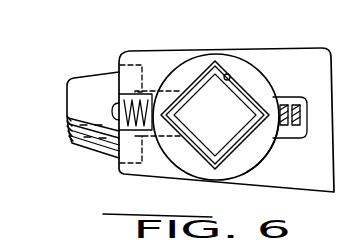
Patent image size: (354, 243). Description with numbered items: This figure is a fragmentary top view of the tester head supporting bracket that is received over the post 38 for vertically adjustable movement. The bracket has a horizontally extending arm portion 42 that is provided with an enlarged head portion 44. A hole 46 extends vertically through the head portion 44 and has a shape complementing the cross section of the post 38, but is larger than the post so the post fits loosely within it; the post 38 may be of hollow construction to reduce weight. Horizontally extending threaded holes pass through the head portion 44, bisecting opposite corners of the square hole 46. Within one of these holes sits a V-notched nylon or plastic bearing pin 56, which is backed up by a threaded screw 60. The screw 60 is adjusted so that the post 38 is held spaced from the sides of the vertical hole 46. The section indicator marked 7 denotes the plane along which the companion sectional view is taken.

The post 38 is at (198, 87).
The horizontally extending arm portion 42 is at (311, 56).
The enlarged head portion 44 is at (258, 67).
The hole 46 is at (229, 75).
The bearing pin 56 is at (270, 152).
The threaded screw 60 is at (297, 100).
The section line 7- 7 is at (112, 113).